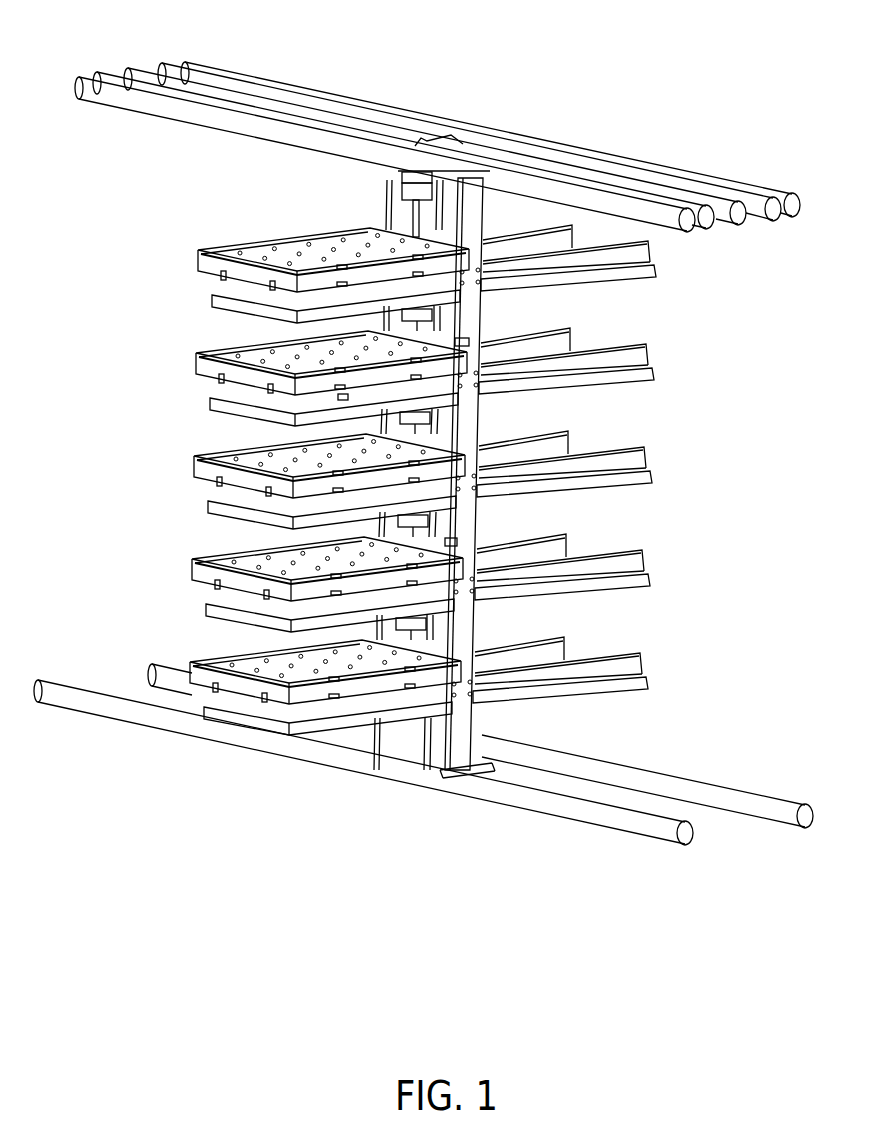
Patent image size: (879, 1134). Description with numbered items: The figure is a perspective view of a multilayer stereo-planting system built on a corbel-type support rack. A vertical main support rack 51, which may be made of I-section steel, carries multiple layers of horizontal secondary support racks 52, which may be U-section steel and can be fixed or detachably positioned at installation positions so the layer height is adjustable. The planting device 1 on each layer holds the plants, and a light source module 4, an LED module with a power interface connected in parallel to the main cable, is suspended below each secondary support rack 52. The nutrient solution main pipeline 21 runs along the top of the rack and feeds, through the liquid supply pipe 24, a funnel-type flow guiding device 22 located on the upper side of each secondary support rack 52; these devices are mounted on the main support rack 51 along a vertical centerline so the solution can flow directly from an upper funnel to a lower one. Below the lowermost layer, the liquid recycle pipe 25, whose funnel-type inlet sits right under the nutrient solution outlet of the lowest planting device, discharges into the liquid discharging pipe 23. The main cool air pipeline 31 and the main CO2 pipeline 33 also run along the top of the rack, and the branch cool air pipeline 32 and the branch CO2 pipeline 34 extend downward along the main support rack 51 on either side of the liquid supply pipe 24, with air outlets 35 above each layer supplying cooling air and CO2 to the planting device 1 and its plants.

The planting device 1 is at (205, 250).
The light source module 4 is at (217, 312).
The nutrient solution main pipeline 21 is at (482, 152).
The funnel-type flow guiding device 22 is at (392, 185).
The liquid discharging pipe 23 is at (708, 793).
The liquid supply pipe 24 is at (420, 142).
The liquid recycle pipe 25 is at (405, 753).
The main cool air pipeline 31 is at (748, 185).
The branch cool air pipeline 32 is at (448, 217).
The main CO2 pipeline 33 is at (773, 207).
The branch CO2 pipeline 34 is at (403, 212).
The air outlets 35 is at (447, 543).
The main support rack 51 is at (470, 343).
The secondary support racks 52 is at (343, 398).